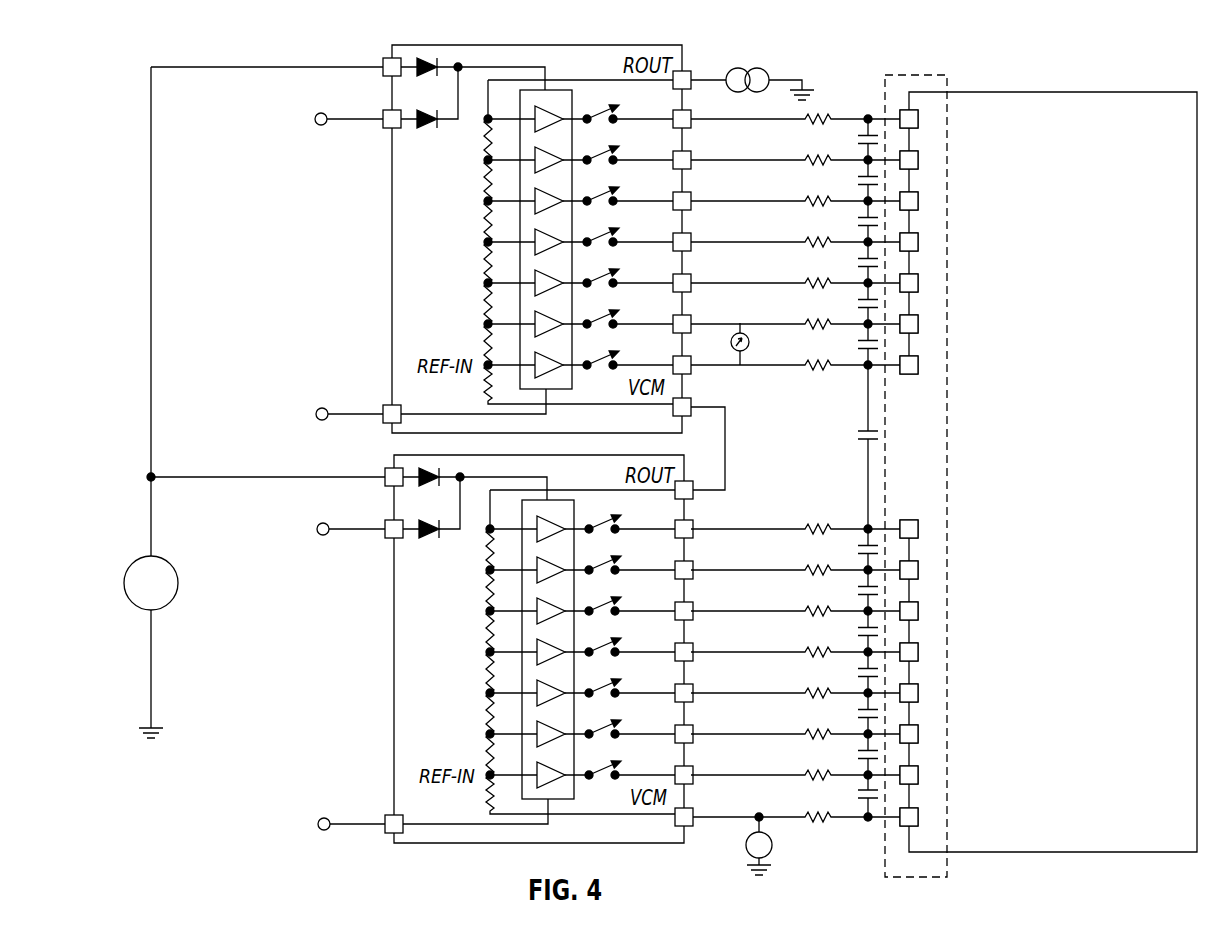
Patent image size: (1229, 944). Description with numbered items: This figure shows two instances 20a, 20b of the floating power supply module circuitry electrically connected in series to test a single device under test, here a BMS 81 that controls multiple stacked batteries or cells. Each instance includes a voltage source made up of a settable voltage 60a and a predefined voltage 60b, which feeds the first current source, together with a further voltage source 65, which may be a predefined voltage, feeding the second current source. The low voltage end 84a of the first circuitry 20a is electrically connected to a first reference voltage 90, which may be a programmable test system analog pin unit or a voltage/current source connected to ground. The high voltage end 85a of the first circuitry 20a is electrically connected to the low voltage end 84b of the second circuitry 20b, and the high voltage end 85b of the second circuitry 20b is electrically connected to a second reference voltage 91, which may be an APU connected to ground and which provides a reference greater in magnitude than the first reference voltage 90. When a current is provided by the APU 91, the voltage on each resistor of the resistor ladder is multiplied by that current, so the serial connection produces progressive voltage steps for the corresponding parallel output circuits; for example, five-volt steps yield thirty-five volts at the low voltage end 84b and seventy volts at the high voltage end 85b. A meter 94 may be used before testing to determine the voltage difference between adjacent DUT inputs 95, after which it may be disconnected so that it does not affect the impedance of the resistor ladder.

The instance of circuitry 20a is at (393, 712).
The instance of circuitry 20b is at (393, 45).
The settable voltage 60a is at (124, 585).
The predefined voltage 60b is at (264, 131).
The voltage source 65 is at (287, 392).
The BMS 81 is at (1038, 92).
The low voltage end 84a is at (688, 826).
The low voltage end 84b is at (692, 411).
The high voltage end 85a is at (694, 496).
The high voltage end 85b is at (683, 78).
The first reference voltage 90 is at (766, 856).
The second reference voltage 91 is at (766, 71).
The meter 94 is at (740, 351).
The DUT inputs 95 is at (937, 877).